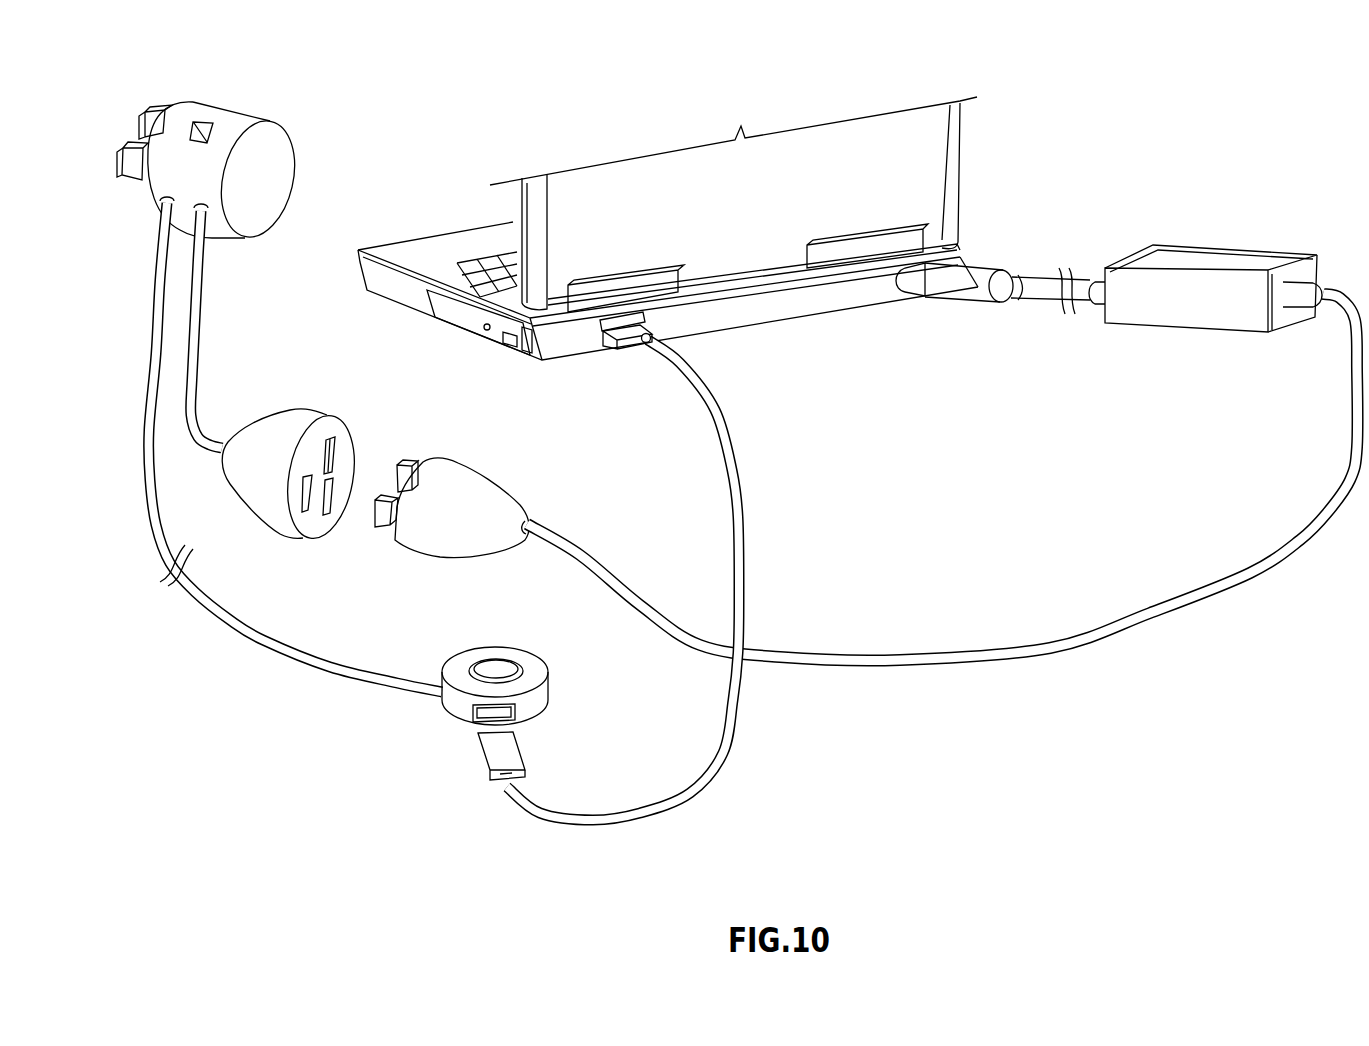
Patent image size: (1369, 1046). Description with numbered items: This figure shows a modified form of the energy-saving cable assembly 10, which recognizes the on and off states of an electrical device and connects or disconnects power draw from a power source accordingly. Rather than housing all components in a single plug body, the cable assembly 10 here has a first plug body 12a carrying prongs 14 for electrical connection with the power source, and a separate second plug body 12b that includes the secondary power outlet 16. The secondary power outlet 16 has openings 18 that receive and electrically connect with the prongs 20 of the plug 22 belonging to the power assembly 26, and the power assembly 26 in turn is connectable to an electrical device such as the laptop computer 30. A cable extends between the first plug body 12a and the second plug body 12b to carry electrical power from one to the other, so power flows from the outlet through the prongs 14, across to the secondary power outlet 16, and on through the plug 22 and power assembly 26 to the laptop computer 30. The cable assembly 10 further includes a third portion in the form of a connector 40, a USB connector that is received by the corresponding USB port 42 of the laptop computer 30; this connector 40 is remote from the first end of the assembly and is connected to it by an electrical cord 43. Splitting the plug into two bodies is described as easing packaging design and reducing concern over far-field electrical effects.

The cable assembly 10 is at (436, 757).
The first plug body 12a is at (187, 143).
The second plug body 12b is at (334, 467).
The prongs 14 is at (164, 112).
The secondary power outlet 16 is at (360, 426).
The openings 18 is at (337, 455).
The prongs 20 is at (416, 461).
The plug 22 is at (451, 500).
The power assembly 26 is at (1118, 346).
The laptop computer 30 is at (731, 234).
The connector 40 is at (604, 345).
The port 42 is at (680, 332).
The electrical cord 43 is at (644, 824).